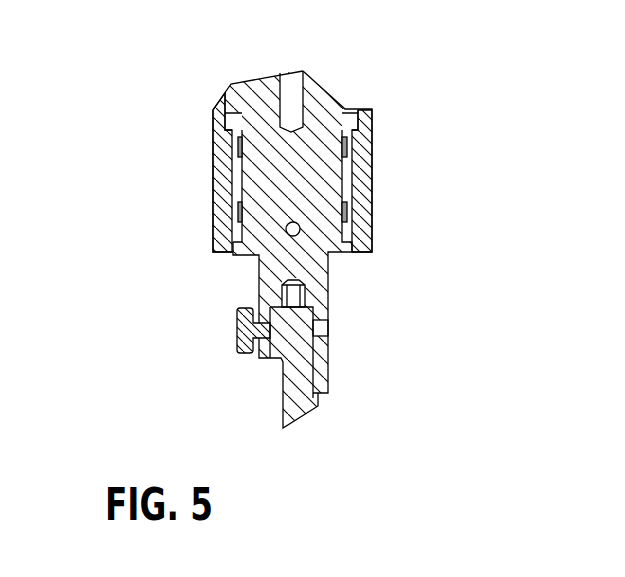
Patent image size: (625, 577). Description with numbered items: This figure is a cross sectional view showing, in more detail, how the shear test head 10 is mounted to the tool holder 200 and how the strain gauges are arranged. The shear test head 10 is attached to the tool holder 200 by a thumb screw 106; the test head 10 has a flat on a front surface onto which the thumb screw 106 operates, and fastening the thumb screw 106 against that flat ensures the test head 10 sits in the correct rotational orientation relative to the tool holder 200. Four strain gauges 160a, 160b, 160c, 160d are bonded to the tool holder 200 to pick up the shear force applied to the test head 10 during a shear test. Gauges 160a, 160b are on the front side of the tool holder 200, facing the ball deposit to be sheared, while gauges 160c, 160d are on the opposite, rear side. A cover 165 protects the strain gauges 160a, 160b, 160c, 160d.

The shear test head 10 is at (280, 402).
The thumb screw 106 is at (237, 333).
The strain gauge 160a is at (238, 212).
The strain gauge 160b is at (238, 150).
The strain gauge 160c is at (347, 210).
The strain gauge 160d is at (347, 150).
The cover 165 is at (212, 238).
The tool holder 200 is at (258, 270).